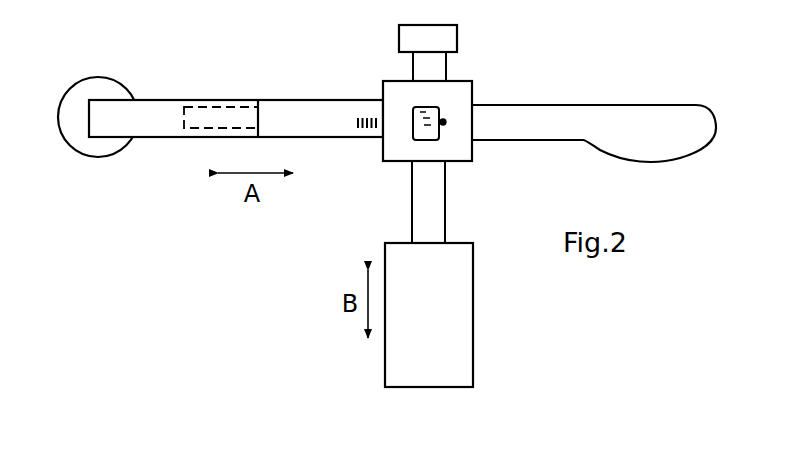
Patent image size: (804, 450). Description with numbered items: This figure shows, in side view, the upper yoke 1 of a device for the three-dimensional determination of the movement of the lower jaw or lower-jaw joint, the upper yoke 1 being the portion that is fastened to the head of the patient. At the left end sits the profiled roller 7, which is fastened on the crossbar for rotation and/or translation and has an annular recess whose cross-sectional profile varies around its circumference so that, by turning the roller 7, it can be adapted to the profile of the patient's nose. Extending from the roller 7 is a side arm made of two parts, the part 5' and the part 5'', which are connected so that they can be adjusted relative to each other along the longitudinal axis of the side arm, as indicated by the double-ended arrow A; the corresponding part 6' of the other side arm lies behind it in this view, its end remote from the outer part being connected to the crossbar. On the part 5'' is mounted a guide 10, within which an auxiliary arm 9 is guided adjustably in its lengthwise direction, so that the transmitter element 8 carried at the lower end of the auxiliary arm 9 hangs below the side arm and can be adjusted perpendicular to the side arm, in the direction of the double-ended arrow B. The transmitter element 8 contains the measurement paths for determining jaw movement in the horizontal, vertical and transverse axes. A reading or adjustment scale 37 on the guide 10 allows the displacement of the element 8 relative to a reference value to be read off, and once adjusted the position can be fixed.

The upper yoke 1 is at (148, 165).
The part of side arm 5' is at (236, 84).
The part of side arm 6' is at (221, 117).
The part of side arm 5'' is at (594, 111).
The profiled roller 7 is at (94, 90).
The transmitter element 8 is at (460, 282).
The auxiliary arm 9 is at (436, 203).
The guide 10 is at (462, 96).
The reading or adjustment scale 37 is at (420, 117).